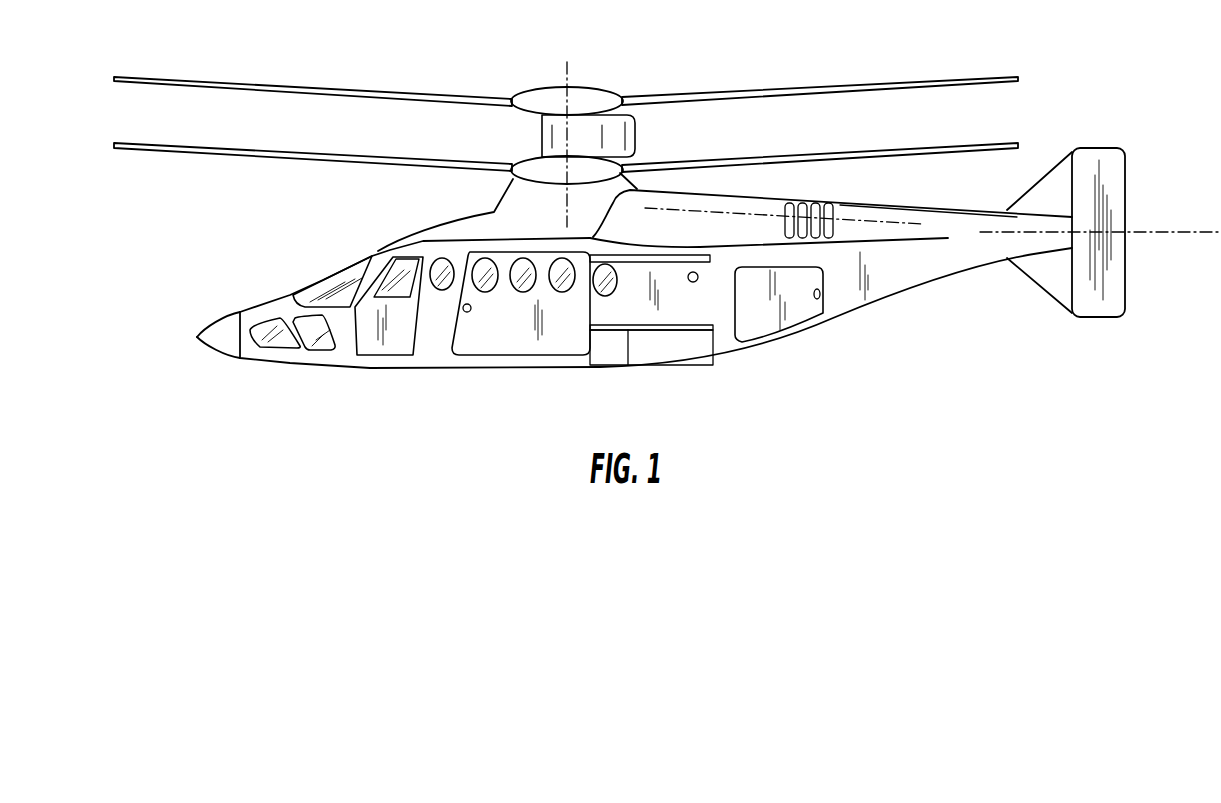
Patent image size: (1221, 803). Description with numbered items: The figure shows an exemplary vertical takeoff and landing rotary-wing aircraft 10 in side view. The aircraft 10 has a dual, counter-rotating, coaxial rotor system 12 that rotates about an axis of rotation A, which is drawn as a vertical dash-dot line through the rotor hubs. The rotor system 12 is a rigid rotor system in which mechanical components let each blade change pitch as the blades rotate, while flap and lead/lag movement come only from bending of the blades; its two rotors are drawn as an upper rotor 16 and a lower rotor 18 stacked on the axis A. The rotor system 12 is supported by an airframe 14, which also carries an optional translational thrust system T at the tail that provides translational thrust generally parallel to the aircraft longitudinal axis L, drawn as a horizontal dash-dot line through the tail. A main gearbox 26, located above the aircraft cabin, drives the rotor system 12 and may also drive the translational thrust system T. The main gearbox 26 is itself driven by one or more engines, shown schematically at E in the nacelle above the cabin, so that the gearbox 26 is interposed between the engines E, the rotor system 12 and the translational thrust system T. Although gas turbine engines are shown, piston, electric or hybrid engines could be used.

The rotary-wing aircraft 10 is at (667, 184).
The coaxial rotor system 12 is at (566, 133).
The airframe 14 is at (418, 233).
The upper rotor 16 is at (602, 88).
The lower rotor 18 is at (508, 178).
The main gearbox 26 is at (552, 224).
The axis of rotation A is at (570, 72).
The engines E is at (709, 231).
The translational thrust system T is at (1108, 135).
The aircraft longitudinal axis L is at (1163, 234).